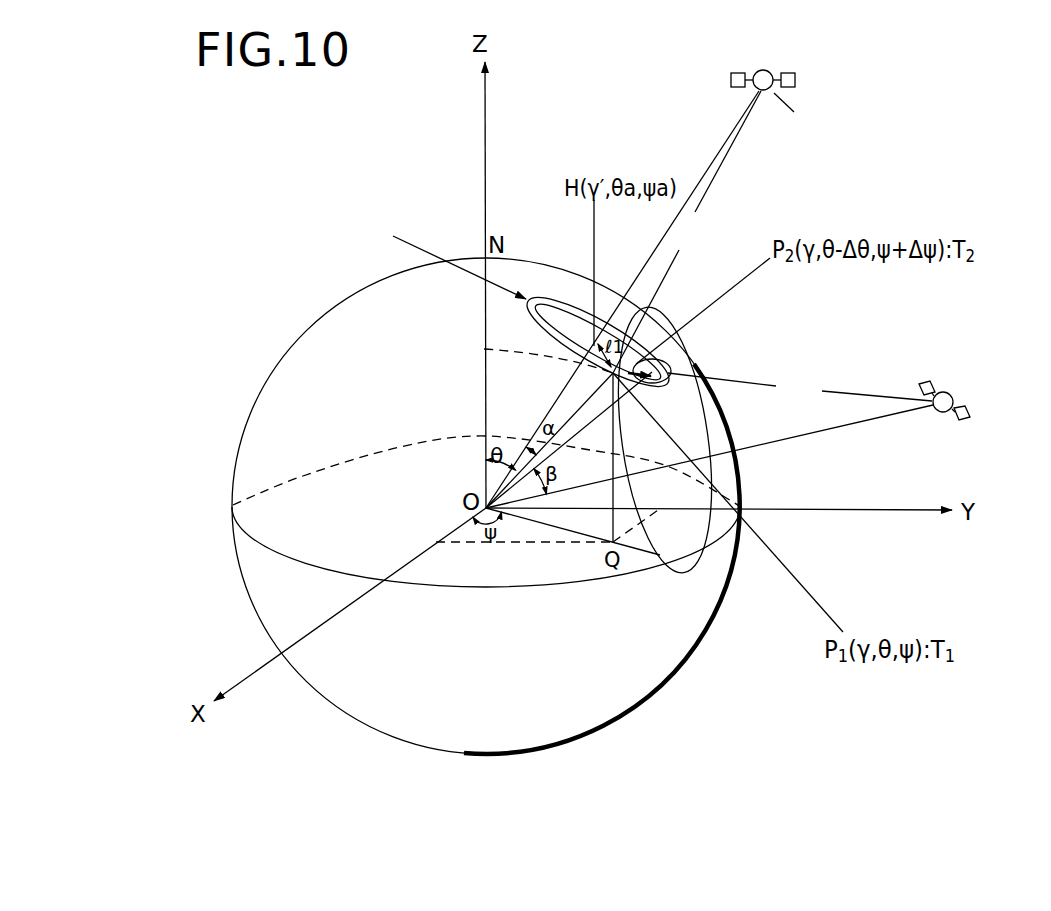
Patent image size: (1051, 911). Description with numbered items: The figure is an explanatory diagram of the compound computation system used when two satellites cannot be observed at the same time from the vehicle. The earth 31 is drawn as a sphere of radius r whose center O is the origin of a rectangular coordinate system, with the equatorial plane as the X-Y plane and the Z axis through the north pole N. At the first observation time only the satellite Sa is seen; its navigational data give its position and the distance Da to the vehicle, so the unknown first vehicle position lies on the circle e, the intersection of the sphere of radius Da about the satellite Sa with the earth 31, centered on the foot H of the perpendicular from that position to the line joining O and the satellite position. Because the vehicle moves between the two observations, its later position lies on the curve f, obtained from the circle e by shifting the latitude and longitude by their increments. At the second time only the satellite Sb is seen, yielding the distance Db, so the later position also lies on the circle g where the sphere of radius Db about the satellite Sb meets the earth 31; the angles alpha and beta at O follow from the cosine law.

The earth 31 is at (352, 296).
The circle of intersection for satellite Sa e is at (450, 257).
The curve of possible positions at time T2 f is at (561, 298).
The circle of intersection for satellite Sb g is at (704, 571).
The satellite Sa is at (769, 70).
The satellite Sb is at (943, 412).
The distance between satellite Sa and the vehicle Da is at (687, 232).
The distance between satellite Sb and the vehicle Db is at (800, 387).